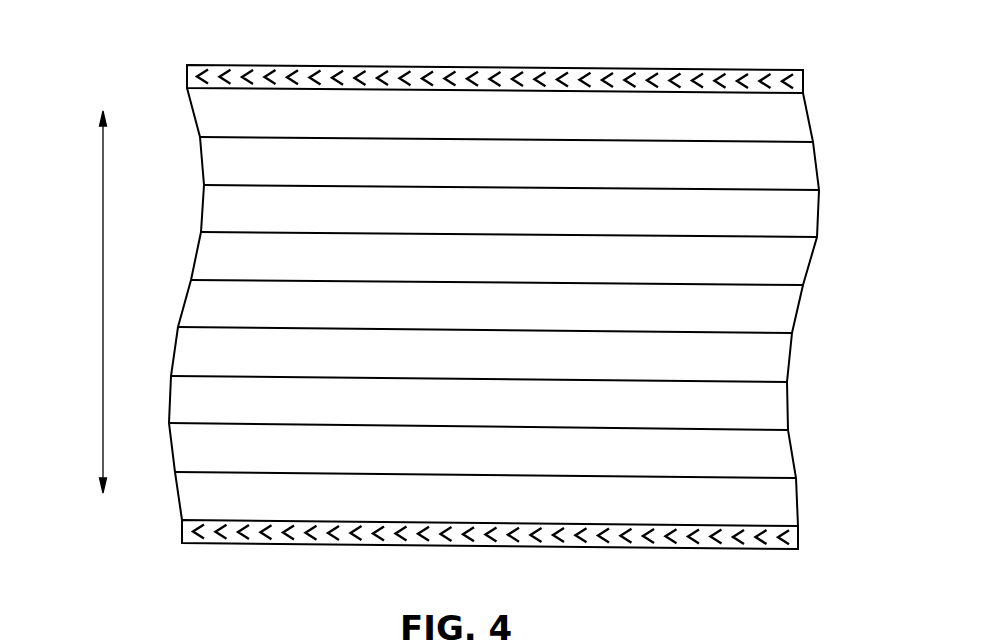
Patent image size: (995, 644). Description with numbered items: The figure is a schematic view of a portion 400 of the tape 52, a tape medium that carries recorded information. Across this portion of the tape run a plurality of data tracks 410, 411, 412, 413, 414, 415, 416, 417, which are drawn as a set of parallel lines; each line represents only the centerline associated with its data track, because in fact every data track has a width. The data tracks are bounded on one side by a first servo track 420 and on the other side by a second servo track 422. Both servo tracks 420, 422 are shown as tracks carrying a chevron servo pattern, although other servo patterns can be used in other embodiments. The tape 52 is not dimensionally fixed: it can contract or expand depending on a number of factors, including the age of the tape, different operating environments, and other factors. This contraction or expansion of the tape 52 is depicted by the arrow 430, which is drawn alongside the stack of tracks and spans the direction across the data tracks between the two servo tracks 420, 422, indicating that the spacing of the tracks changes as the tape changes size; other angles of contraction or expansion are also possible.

The tape 52 is at (820, 73).
The portion of the tape 400 is at (533, 71).
The data track 410 is at (218, 137).
The data track 411 is at (222, 185).
The data track 412 is at (219, 232).
The data track 413 is at (209, 280).
The data track 414 is at (196, 327).
The data track 415 is at (189, 376).
The data track 416 is at (187, 423).
The data track 417 is at (193, 472).
The first servo track 420 is at (352, 72).
The second servo track 422 is at (345, 542).
The arrow 430 is at (102, 301).